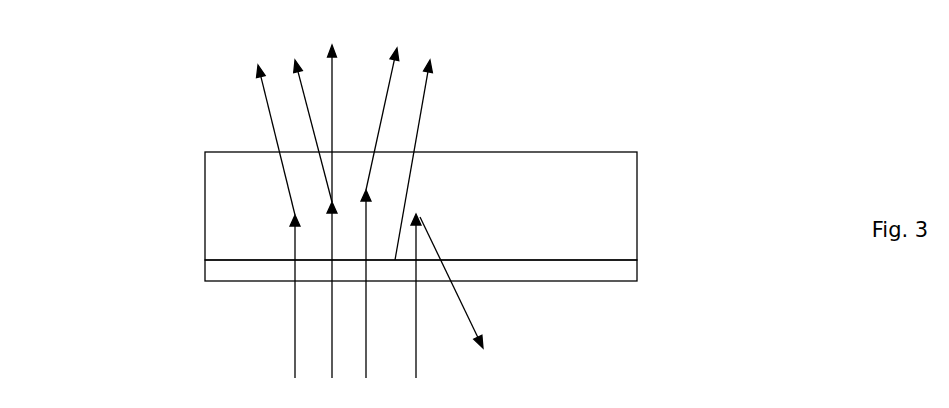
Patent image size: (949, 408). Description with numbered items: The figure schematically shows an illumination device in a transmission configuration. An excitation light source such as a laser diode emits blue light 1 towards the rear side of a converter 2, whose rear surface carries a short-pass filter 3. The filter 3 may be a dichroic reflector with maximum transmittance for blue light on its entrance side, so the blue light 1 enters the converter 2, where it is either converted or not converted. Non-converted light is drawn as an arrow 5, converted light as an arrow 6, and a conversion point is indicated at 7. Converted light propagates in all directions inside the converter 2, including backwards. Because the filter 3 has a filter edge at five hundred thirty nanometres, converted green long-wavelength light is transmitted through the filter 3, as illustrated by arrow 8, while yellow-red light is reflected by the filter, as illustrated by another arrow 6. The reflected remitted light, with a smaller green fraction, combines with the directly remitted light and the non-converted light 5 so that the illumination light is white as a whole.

The blue light 1 is at (338, 407).
The converter 2 is at (613, 203).
The short-pass filter 3 is at (615, 274).
The non-converted light 5 is at (313, 111).
The converted light 6 is at (341, 141).
The conversion point 7 is at (295, 217).
The transmitted converted light 8 is at (455, 296).